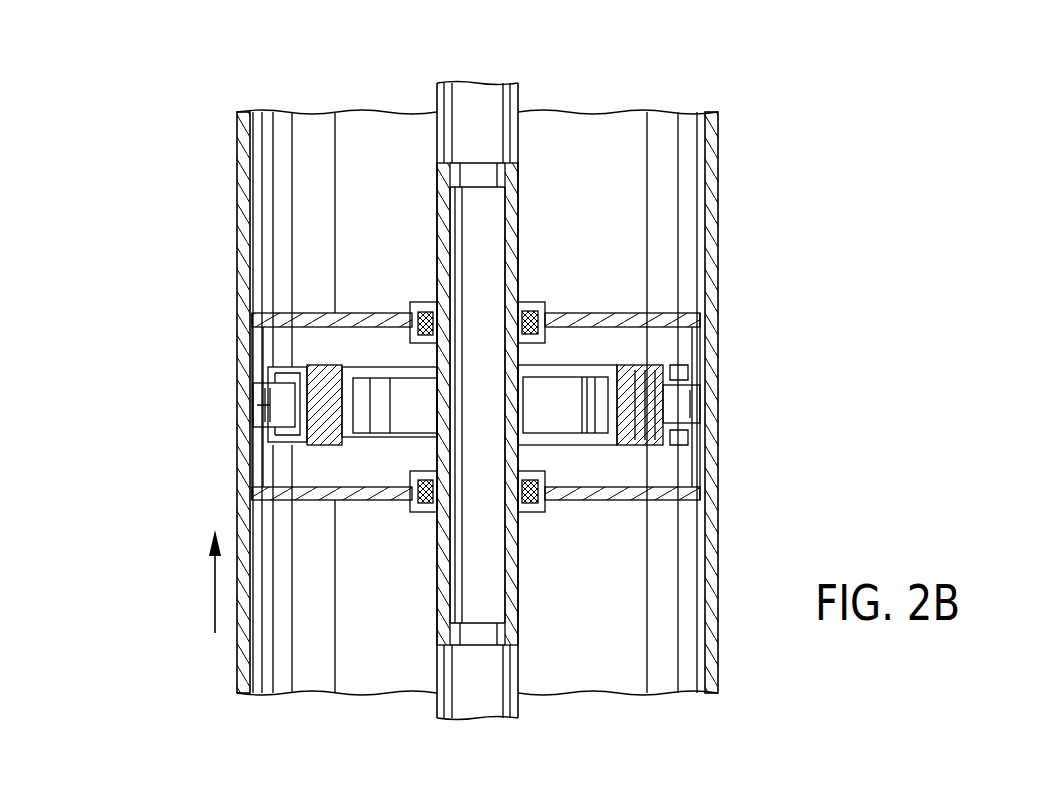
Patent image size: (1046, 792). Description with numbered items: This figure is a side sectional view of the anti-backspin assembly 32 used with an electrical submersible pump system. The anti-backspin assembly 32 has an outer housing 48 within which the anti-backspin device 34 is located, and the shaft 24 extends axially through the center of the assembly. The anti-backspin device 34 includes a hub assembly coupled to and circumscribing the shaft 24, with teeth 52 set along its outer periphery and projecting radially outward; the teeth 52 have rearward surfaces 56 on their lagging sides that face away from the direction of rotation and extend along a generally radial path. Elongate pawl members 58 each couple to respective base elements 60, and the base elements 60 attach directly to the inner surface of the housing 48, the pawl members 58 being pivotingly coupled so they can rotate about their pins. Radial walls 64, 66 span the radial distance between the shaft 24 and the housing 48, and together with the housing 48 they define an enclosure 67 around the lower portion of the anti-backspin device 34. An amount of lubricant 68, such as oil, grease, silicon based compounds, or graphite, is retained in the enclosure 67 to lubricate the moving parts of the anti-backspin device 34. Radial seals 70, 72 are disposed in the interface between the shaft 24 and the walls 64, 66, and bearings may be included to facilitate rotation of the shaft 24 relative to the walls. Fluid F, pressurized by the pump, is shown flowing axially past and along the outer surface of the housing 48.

The shaft 24 is at (520, 95).
The anti-backspin assembly 32 is at (212, 183).
The anti-backspin device 34 is at (372, 305).
The housing 48 is at (237, 233).
The teeth 52 is at (637, 432).
The rearward surfaces 56 is at (310, 366).
The pawl members 58 is at (287, 445).
The base elements 60 is at (263, 398).
The radial wall 64 is at (600, 312).
The radial wall 66 is at (370, 505).
The enclosure 67 is at (133, 430).
The lubricant 68 is at (582, 395).
The radial seal 70 is at (537, 300).
The radial seal 72 is at (546, 515).
The fluid F is at (215, 588).